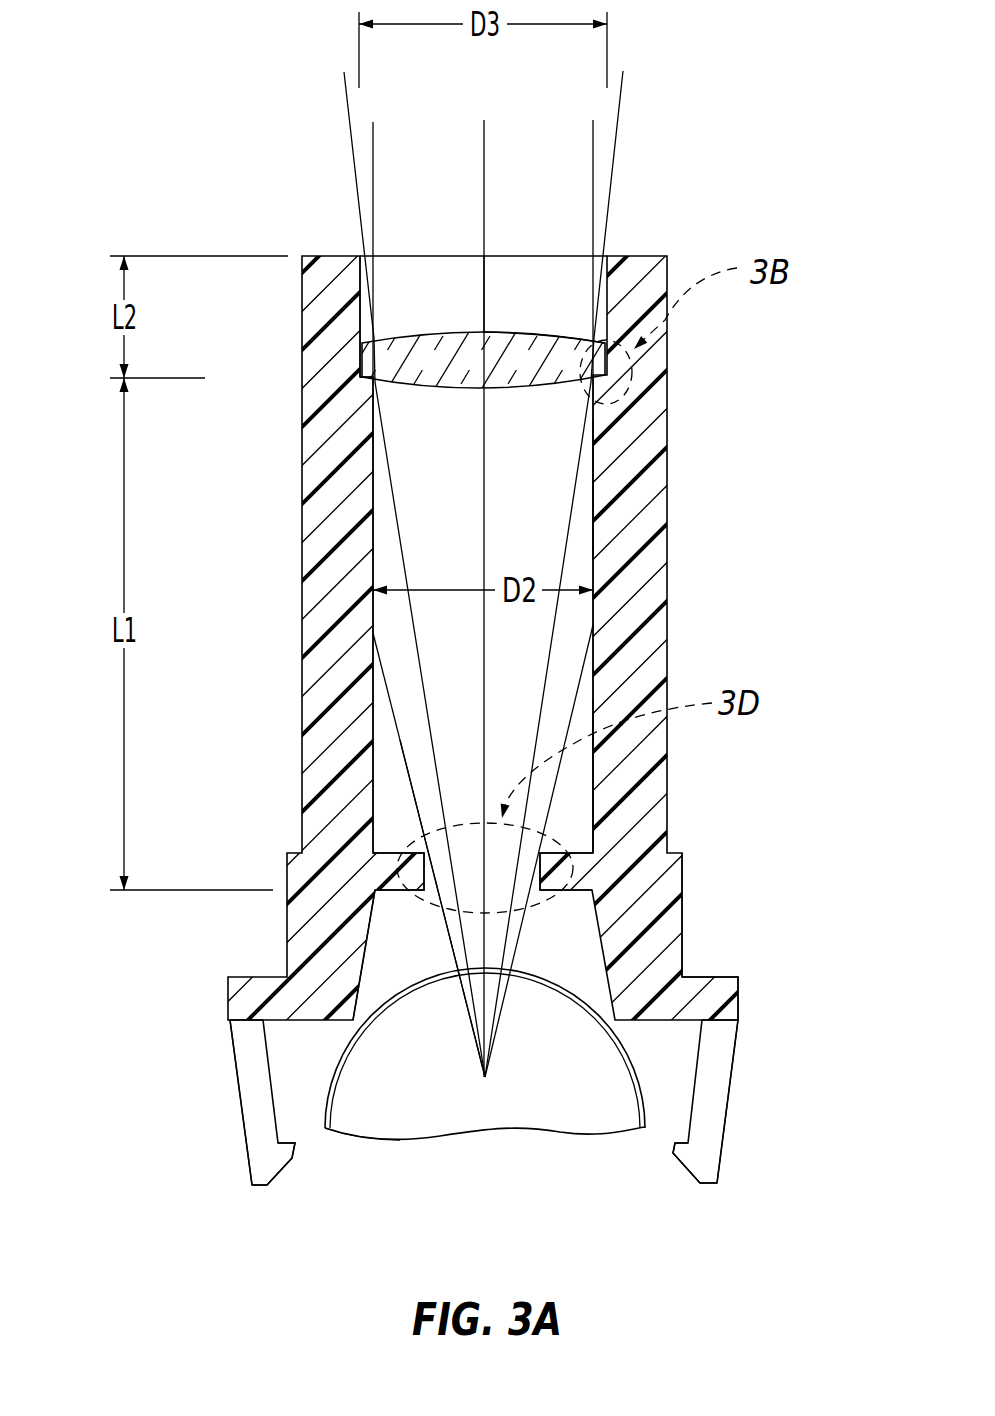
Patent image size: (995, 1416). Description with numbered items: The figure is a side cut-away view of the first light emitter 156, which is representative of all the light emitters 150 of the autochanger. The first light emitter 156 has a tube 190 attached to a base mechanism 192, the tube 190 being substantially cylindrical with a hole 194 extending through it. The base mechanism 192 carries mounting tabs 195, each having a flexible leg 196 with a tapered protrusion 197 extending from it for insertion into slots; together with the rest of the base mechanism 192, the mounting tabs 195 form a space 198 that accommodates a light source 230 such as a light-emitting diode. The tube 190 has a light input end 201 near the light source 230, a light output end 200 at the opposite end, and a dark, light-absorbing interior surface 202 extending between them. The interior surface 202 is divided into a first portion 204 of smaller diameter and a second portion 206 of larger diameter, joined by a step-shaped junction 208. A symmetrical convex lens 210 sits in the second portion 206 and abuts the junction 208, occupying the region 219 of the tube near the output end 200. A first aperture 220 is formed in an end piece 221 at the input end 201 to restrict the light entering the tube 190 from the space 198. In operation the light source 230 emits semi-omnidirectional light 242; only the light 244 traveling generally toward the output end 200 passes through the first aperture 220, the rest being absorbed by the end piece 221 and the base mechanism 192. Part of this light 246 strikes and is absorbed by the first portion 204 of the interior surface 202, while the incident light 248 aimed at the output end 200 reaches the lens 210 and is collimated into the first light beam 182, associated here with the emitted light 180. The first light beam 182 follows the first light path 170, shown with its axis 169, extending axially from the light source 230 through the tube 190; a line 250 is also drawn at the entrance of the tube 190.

The light emitters 150 is at (497, 664).
The first light emitter 156 is at (243, 132).
The optical axis 169 is at (515, 574).
The first light path 170 is at (527, 113).
The light beam edge ray 180 is at (632, 574).
The first light beam 182 is at (635, 108).
The tube 190 is at (302, 664).
The base mechanism 192 is at (690, 912).
The hole 194 is at (527, 243).
The mounting tabs 195 is at (226, 1087).
The leg 196 is at (240, 1130).
The protrusion 197 is at (284, 1173).
The space 198 is at (304, 1117).
The light output end 200 is at (302, 330).
The light input end 201 is at (682, 953).
The interior surface 202 is at (598, 493).
The first portion 204 is at (598, 770).
The second portion 206 is at (369, 306).
The junction 208 is at (395, 385).
The lens 210 is at (548, 322).
The lens receiving cavity 219 is at (432, 288).
The first aperture 220 is at (540, 811).
The end piece 221 is at (410, 848).
The light source 230 is at (500, 1116).
The light 242 is at (390, 938).
The light 244 is at (385, 752).
The light 246 is at (391, 702).
The incident light 248 is at (398, 532).
The media pieces 250 is at (373, 157).